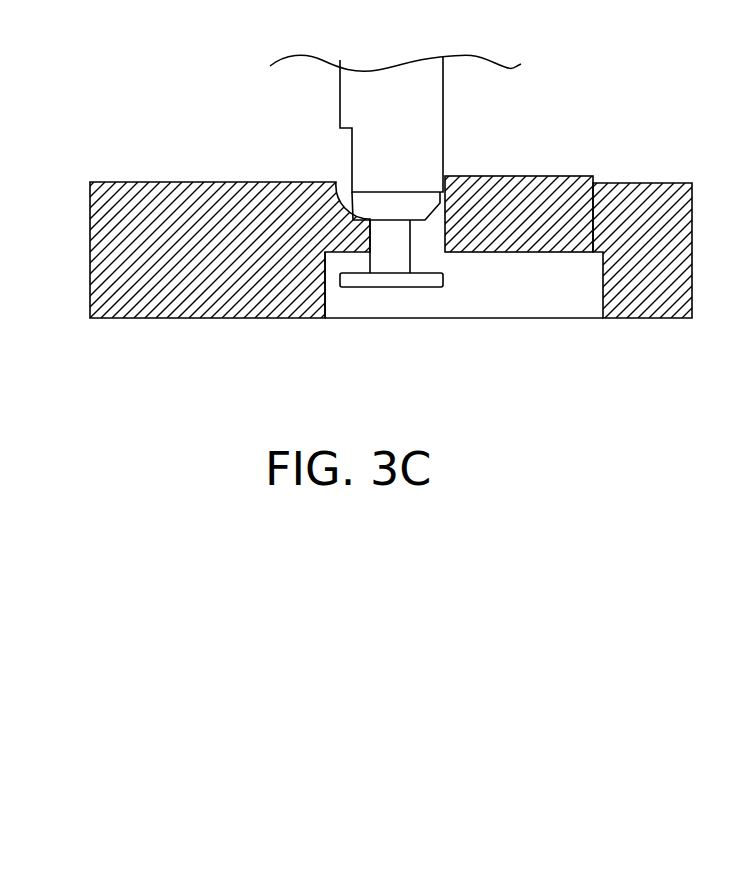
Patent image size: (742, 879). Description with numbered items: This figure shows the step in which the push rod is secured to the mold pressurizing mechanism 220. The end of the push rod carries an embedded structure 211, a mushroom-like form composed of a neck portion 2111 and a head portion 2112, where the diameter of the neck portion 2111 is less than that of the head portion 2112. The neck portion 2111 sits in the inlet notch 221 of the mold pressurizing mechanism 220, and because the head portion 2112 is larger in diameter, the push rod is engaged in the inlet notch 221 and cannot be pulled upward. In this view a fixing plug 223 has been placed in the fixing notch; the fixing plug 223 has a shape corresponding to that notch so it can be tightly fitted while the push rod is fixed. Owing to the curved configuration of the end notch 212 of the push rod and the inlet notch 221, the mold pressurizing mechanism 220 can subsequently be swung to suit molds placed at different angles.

The embedded structure 211 is at (467, 330).
The neck portion 2111 is at (410, 255).
The head portion 2112 is at (390, 287).
The end notch 212 is at (339, 149).
The mold pressurizing mechanism 220 is at (218, 318).
The inlet notch 221 is at (334, 250).
The fixing plug 223 is at (487, 176).